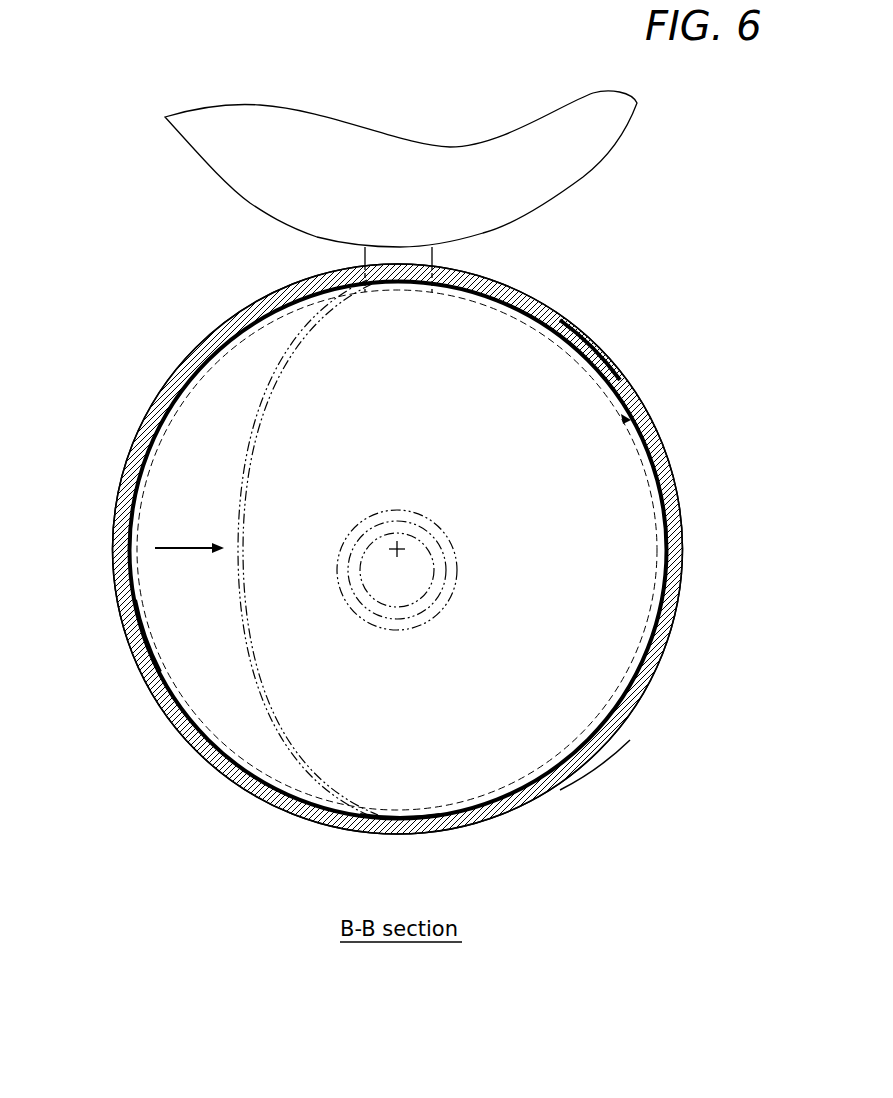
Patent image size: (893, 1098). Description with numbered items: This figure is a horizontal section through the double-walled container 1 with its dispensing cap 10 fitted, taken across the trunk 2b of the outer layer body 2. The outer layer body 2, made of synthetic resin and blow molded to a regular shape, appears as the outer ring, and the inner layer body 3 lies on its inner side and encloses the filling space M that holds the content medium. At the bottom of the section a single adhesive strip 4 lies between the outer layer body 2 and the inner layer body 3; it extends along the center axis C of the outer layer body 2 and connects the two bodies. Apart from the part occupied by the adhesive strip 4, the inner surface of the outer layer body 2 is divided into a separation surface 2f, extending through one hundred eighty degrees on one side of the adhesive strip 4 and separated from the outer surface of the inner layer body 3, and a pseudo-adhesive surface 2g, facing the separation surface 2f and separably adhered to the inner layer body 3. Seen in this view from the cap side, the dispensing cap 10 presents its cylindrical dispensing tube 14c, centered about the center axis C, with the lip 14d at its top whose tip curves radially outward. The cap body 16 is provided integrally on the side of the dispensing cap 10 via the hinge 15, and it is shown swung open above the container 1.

The double-walled container 1 is at (160, 356).
The outer layer body 2 is at (654, 690).
The trunk 2b is at (600, 745).
The separation surface 2f is at (148, 641).
The pseudo-adhesive surface 2g is at (586, 366).
The inner layer body 3 is at (168, 668).
The adhesive strip 4 is at (402, 822).
The dispensing cap 10 is at (648, 406).
The dispensing tube 14c is at (440, 534).
The lip 14d is at (410, 630).
The hinge 15 is at (420, 257).
The cap body 16 is at (394, 165).
The center axis C is at (392, 547).
The filling space M is at (558, 541).